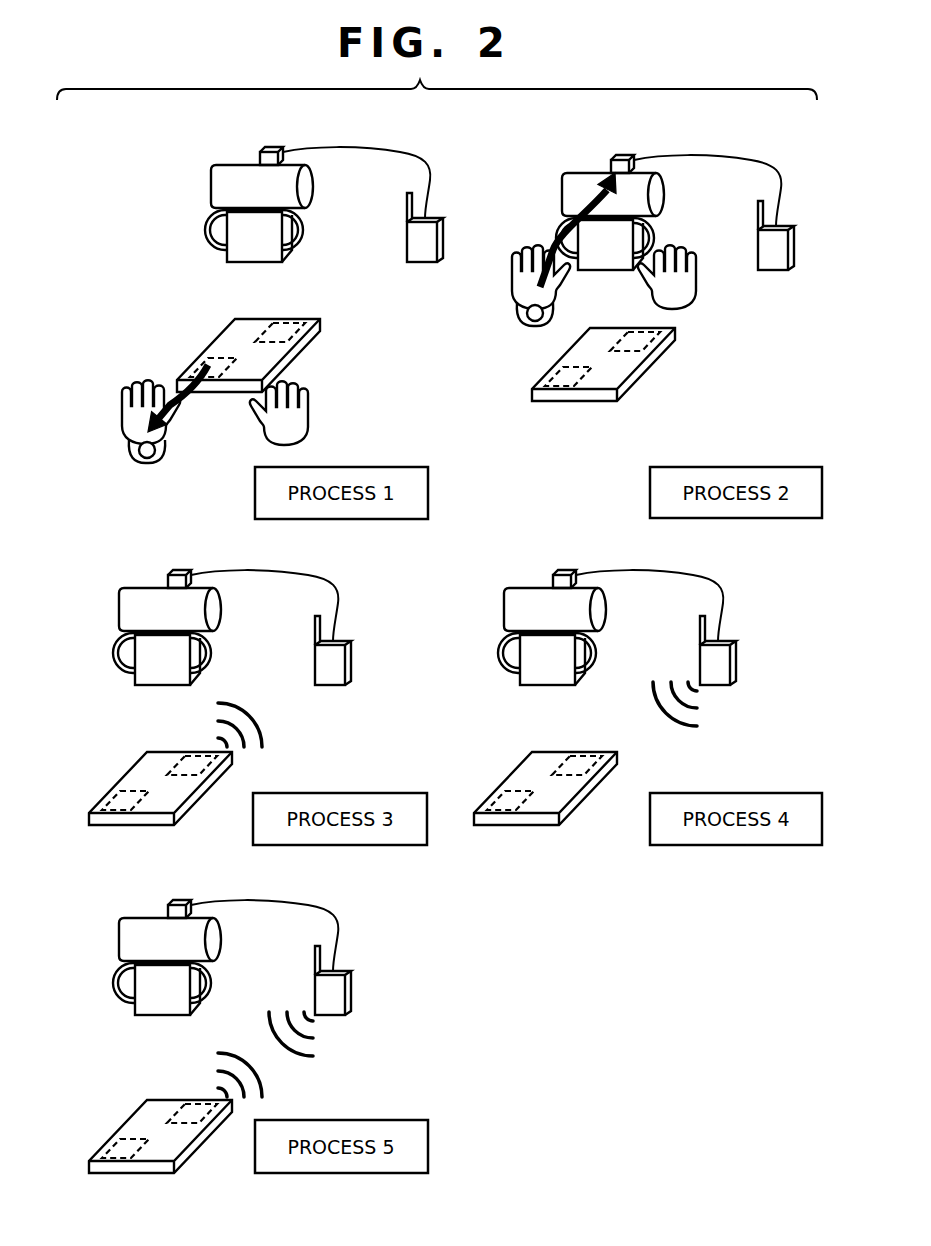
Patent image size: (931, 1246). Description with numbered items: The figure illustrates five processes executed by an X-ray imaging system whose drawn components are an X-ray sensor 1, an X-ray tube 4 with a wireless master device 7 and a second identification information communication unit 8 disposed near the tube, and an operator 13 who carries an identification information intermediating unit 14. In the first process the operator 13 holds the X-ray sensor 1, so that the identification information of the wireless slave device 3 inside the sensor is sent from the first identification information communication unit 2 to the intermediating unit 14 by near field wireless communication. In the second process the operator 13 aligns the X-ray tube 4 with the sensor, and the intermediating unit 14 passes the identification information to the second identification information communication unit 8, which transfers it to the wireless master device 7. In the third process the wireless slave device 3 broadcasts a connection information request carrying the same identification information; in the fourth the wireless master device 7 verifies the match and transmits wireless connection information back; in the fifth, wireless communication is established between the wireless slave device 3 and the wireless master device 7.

The X-ray sensor 1 is at (273, 352).
The first identification information communication unit 2 is at (212, 358).
The wireless slave device 3 is at (280, 322).
The X-ray tube 4 is at (212, 195).
The wireless master device 7 is at (447, 237).
The second identification information communication unit 8 is at (274, 147).
The operator 13 is at (130, 424).
The identification information intermediating unit 14 is at (160, 462).